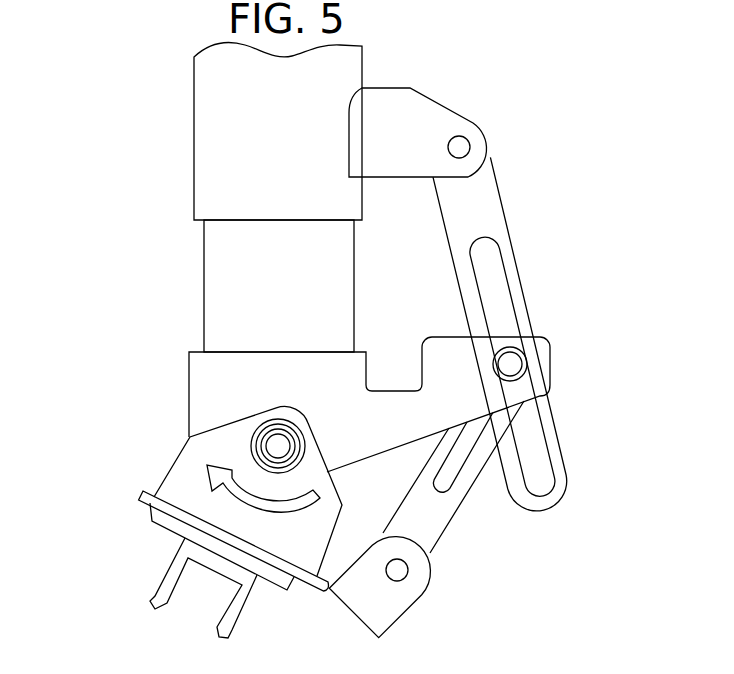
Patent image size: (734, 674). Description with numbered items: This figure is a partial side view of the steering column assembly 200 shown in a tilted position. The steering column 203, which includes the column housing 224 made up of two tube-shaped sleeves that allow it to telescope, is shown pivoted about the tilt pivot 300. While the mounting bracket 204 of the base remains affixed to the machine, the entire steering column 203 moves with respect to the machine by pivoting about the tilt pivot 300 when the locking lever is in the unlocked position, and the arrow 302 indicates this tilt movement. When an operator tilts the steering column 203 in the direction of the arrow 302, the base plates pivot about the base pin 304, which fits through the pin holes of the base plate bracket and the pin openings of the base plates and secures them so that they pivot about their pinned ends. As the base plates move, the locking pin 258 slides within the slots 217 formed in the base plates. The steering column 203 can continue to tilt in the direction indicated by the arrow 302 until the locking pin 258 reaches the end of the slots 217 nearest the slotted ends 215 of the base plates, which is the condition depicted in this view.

The steering column assembly 200 is at (160, 158).
The steering column 203 is at (218, 87).
The column housing 224 is at (222, 243).
The slotted ends 215 is at (545, 330).
The locking pin 258 is at (512, 365).
The slots 217 is at (450, 481).
The base pin 304 is at (398, 571).
The tilt pivot 300 is at (276, 450).
The arrow 302 is at (200, 500).
The mounting bracket 204 is at (153, 497).